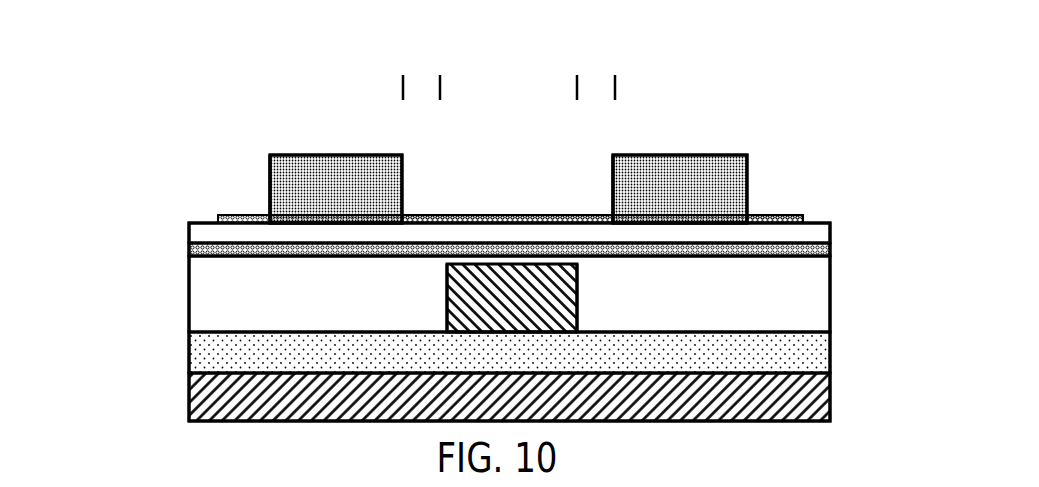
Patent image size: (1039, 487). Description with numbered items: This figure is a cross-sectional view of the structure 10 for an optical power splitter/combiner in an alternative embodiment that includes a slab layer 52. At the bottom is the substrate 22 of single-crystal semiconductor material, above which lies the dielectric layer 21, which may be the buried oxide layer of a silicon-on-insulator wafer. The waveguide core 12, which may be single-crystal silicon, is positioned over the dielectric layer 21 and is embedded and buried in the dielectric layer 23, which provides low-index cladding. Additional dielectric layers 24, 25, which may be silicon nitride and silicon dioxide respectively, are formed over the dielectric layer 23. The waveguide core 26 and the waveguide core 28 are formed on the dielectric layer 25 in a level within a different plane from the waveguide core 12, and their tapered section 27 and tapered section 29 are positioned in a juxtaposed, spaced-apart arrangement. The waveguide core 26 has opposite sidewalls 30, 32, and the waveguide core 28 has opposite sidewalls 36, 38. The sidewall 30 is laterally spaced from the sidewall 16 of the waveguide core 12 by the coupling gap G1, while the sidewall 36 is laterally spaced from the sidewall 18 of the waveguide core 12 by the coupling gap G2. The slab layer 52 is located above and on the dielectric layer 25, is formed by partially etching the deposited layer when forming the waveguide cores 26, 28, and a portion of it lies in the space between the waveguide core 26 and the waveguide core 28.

The structure 10 is at (118, 124).
The waveguide core 12 is at (525, 291).
The sidewall 16 is at (447, 299).
The sidewall 18 is at (577, 313).
The dielectric layer 21 is at (220, 360).
The substrate 22 is at (220, 409).
The dielectric layer 23 is at (210, 290).
The dielectric layer 24 is at (815, 250).
The dielectric layer 25 is at (210, 234).
The waveguide core 26 is at (301, 131).
The tapered section 27 is at (320, 176).
The waveguide core 28 is at (720, 131).
The tapered section 29 is at (705, 183).
The sidewall 30 is at (403, 205).
The sidewall 32 is at (270, 192).
The sidewall 36 is at (613, 183).
The sidewall 38 is at (746, 213).
The slab layer 52 is at (218, 216).
The coupling gap G1 is at (363, 88).
The coupling gap G2 is at (652, 88).